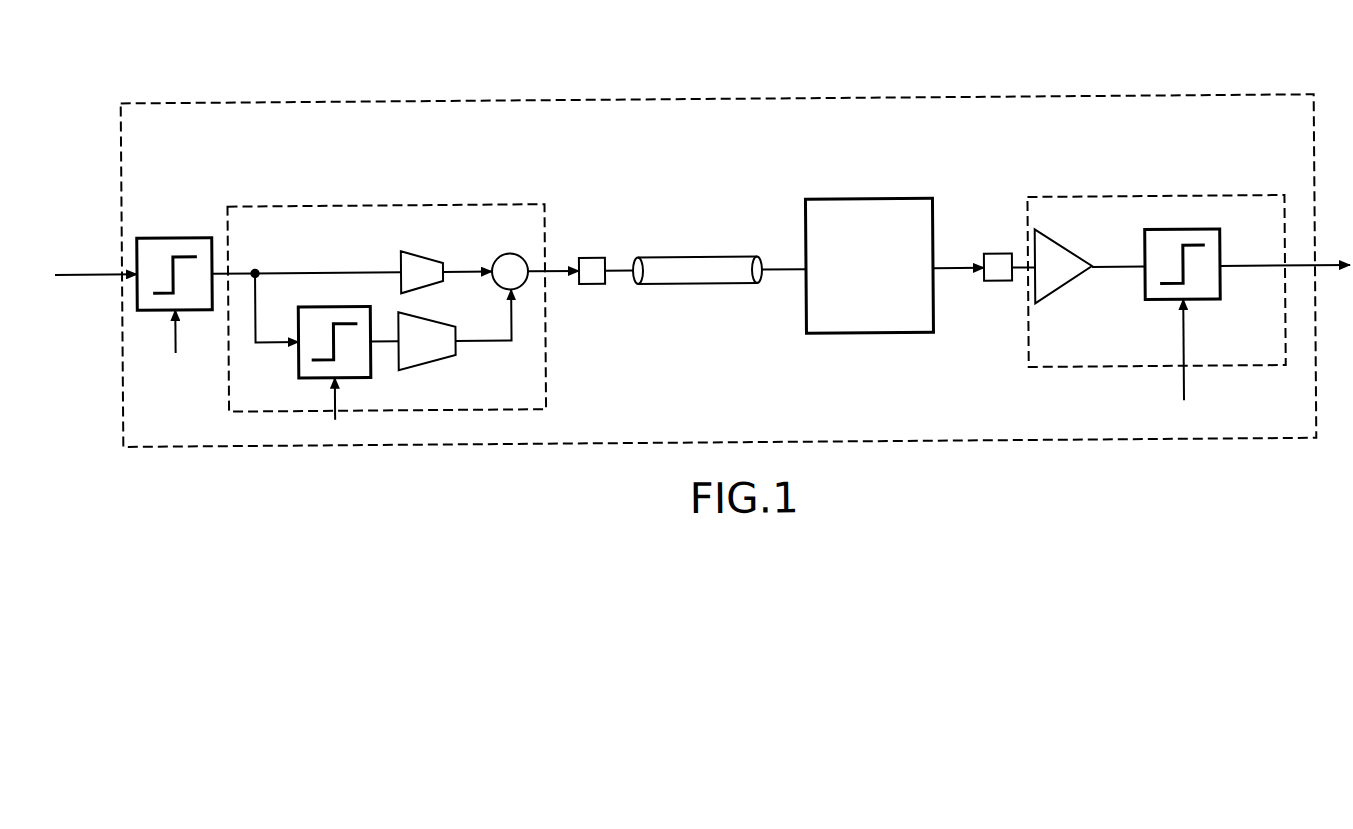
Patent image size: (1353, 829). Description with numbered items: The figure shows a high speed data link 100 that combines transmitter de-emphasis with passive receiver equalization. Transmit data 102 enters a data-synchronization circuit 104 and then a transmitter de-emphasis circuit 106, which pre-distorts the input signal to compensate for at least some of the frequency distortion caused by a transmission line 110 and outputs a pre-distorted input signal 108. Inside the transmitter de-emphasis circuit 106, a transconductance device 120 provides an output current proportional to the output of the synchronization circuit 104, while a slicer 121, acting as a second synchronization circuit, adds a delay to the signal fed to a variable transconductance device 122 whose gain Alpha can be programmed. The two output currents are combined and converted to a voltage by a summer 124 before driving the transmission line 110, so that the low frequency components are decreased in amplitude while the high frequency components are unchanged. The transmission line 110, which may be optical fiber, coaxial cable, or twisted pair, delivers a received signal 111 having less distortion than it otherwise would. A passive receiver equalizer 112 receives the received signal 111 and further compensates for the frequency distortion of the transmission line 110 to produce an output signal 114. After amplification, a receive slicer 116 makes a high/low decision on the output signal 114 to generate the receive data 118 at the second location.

The high speed data link 100 is at (920, 99).
The transmit data 102 is at (80, 270).
The data-synchronization circuit 104 is at (178, 234).
The transmitter de-emphasis circuit 106 is at (493, 203).
The pre-distorted input signal 108 is at (620, 268).
The transmission line 110 is at (697, 257).
The received signal 111 is at (790, 268).
The passive receiver equalizer 112 is at (868, 200).
The output signal 114 is at (950, 270).
The receive slicer 116 is at (1155, 200).
The receive data 118 is at (1236, 270).
The transconductance device 120 is at (417, 253).
The slicer 121 is at (333, 304).
The variable transconductance device 122 is at (452, 358).
The summer 124 is at (509, 252).